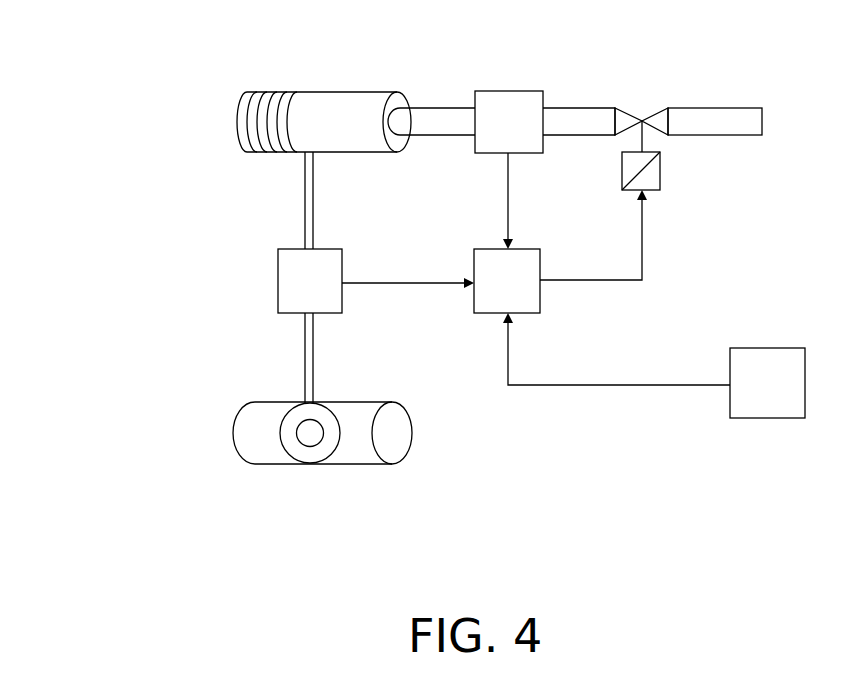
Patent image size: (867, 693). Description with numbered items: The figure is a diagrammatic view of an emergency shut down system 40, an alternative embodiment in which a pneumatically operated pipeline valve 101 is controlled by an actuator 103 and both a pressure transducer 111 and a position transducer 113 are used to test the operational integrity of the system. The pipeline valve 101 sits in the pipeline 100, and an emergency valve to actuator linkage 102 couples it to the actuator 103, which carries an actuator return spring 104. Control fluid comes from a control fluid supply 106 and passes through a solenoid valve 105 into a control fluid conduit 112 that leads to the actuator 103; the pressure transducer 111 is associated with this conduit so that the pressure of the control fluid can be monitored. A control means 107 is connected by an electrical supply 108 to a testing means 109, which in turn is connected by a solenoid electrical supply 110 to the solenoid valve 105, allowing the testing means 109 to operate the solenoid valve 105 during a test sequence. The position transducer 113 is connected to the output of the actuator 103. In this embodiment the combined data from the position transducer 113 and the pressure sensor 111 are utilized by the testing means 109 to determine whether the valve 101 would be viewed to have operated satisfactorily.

The emergency shut down system 40 is at (107, 110).
The pipeline 100 is at (358, 464).
The pipeline valve 101 is at (308, 464).
The emergency valve to actuator linkage 102 is at (305, 203).
The actuator 103 is at (352, 92).
The actuator return spring 104 is at (270, 92).
The solenoid valve 105 is at (660, 170).
The control fluid supply 106 is at (715, 108).
The control means 107 is at (763, 348).
The electrical supply 108 is at (575, 385).
The testing means 109 is at (541, 300).
The solenoid electrical supply 110 is at (642, 241).
The pressure transducer 111 is at (500, 155).
The control fluid conduit 112 is at (578, 108).
The position transducer 113 is at (278, 298).